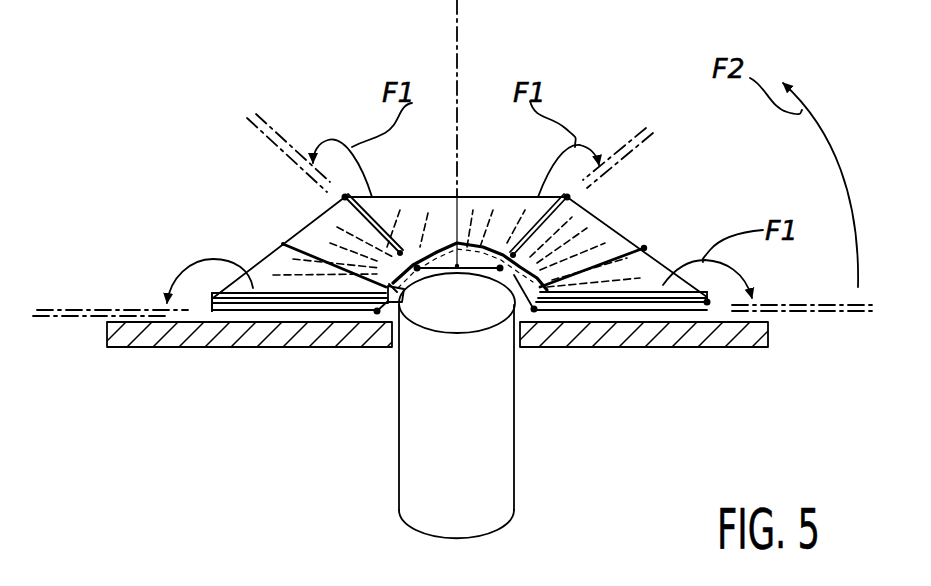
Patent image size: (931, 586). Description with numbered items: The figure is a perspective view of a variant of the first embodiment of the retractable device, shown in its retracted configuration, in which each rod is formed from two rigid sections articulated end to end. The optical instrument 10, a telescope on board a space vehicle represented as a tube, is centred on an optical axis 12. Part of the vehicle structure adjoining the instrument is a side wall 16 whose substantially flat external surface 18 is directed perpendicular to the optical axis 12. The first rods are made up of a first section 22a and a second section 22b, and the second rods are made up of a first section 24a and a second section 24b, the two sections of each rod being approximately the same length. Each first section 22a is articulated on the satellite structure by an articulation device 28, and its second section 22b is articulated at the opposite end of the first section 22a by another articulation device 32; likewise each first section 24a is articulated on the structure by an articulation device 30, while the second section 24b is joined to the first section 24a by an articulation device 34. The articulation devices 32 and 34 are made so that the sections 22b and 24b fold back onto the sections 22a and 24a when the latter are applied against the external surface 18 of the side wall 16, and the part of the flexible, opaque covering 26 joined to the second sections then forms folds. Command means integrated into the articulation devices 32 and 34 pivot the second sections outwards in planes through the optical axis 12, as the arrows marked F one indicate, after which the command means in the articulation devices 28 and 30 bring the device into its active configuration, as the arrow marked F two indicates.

The optical instrument 10 is at (503, 472).
The optical axis 12 is at (458, 68).
The side wall 16 is at (700, 332).
The external surface 18 is at (133, 330).
The first section of first rod 22a is at (245, 308).
The second section of first rod 22b is at (204, 262).
The first section of second rod 24a is at (398, 292).
The second section of second rod 24b is at (302, 252).
The covering 26 is at (598, 233).
The articulation device 28 is at (377, 313).
The articulation device 30 is at (403, 289).
The articulation device 32 is at (206, 304).
The articulation device 34 is at (308, 245).